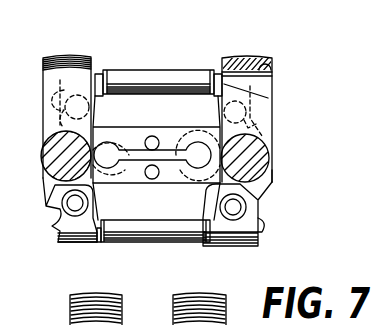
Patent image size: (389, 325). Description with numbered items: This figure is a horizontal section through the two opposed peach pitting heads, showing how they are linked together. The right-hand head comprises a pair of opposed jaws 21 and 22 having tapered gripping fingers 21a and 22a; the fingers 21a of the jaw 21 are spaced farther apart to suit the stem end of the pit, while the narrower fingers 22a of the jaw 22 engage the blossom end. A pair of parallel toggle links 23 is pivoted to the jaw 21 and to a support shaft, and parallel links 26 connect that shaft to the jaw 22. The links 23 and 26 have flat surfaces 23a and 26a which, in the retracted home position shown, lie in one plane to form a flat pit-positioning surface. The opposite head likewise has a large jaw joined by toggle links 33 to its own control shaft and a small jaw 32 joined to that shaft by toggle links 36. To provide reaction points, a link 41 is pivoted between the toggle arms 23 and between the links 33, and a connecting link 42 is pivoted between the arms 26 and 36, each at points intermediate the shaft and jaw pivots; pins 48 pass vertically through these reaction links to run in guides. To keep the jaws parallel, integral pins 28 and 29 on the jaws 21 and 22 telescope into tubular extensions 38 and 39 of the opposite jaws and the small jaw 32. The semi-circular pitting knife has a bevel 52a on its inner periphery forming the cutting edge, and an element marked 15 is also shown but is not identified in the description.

The spring assembly 15 is at (96, 50).
The toggle links 33 is at (50, 108).
The toggle links 36 is at (58, 201).
The small jaw 32 is at (78, 244).
The pin 29 is at (98, 244).
The pin 28 is at (98, 73).
The tubular extension 38 is at (185, 71).
The jaw 21 is at (224, 74).
The link 41 is at (201, 128).
The pins 48 is at (152, 136).
The connecting link 42 is at (183, 201).
The tubular extension 39 is at (186, 243).
The toggle links 23 is at (266, 134).
The bevel 52a is at (268, 66).
The gripping fingers 21a is at (262, 102).
The flat surface 23a is at (270, 154).
The flat surface 26a is at (268, 177).
The links 26 is at (256, 190).
The gripping fingers 22a is at (258, 232).
The jaw 22 is at (228, 246).